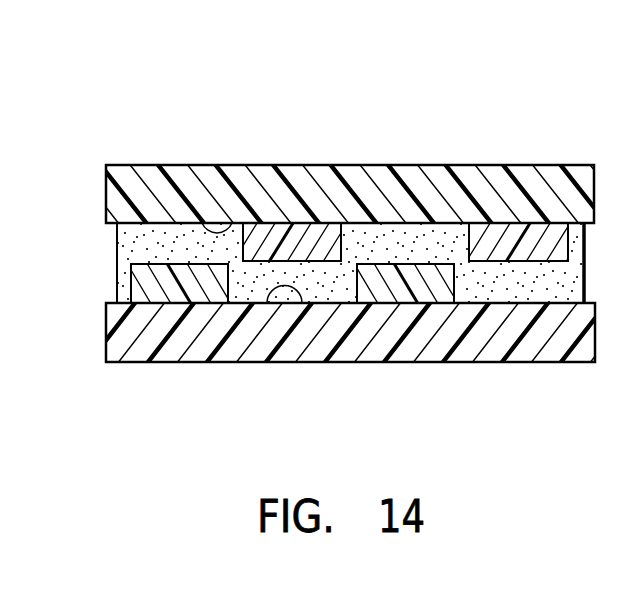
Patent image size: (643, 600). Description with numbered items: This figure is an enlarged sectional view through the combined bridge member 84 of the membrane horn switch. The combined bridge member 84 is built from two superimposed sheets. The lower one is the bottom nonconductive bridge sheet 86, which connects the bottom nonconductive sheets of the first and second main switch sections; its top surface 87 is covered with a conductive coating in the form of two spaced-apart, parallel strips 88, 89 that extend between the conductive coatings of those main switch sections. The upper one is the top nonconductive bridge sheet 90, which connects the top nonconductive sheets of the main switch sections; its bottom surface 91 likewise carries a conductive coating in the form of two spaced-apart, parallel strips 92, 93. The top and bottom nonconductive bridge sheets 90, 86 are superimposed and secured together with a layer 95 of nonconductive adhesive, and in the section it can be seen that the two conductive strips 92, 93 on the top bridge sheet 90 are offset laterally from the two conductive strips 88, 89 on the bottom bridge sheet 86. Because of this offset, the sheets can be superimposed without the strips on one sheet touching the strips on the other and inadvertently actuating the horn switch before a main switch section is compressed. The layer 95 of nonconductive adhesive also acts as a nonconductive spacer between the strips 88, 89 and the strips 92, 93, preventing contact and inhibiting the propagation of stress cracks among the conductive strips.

The combined bridge member 84 is at (512, 98).
The bottom nonconductive bridge sheet 86 is at (292, 348).
The top surface 87 is at (271, 303).
The conductive strip 88 is at (175, 264).
The conductive strip 89 is at (400, 264).
The top nonconductive bridge sheet 90 is at (288, 172).
The bottom surface 91 is at (203, 222).
The conductive strip 92 is at (331, 262).
The conductive strip 93 is at (566, 262).
The layer of nonconductive adhesive 95 is at (585, 248).